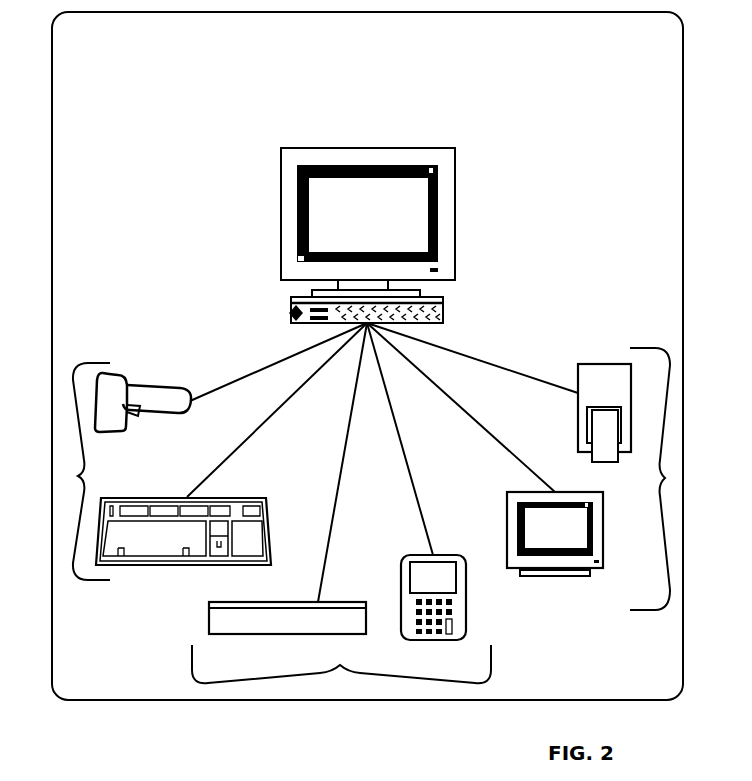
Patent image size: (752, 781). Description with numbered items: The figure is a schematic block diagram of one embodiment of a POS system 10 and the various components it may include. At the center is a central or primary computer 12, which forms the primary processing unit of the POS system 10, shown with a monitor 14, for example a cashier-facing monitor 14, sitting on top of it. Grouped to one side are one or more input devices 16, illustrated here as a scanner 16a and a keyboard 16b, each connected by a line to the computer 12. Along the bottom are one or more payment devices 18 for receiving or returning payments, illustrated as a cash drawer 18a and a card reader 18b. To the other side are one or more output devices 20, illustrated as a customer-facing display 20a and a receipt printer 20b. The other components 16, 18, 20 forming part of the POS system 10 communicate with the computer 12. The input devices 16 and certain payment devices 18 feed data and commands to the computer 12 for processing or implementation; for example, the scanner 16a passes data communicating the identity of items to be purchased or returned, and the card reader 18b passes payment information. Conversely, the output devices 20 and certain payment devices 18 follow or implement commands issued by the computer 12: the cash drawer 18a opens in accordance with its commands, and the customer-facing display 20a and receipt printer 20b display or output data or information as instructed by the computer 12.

The POS system 10 is at (528, 79).
The computer 12 is at (466, 291).
The monitor 14 is at (261, 181).
The input devices 16 is at (78, 476).
The scanner 16a is at (157, 400).
The keyboard 16b is at (246, 505).
The payment devices 18 is at (340, 665).
The cash drawer 18a is at (288, 620).
The card reader 18b is at (418, 558).
The output devices 20 is at (665, 478).
The customer-facing display 20a is at (552, 540).
The receipt printer 20b is at (597, 382).